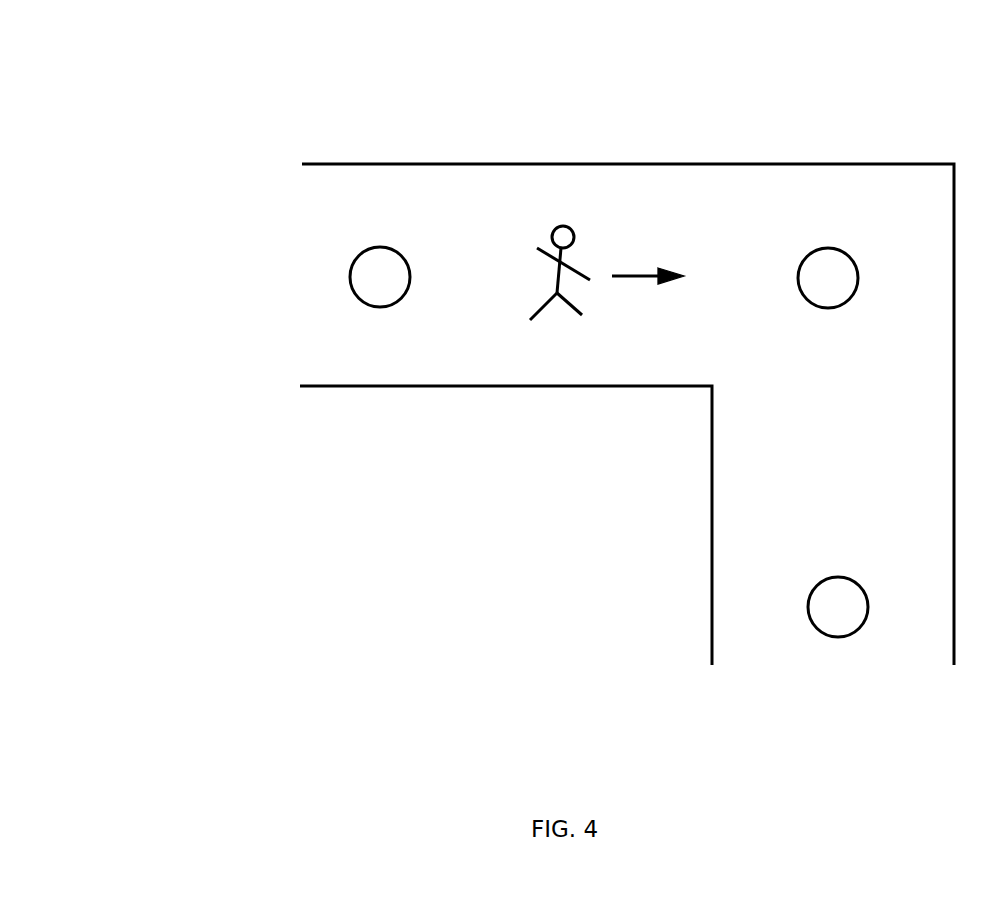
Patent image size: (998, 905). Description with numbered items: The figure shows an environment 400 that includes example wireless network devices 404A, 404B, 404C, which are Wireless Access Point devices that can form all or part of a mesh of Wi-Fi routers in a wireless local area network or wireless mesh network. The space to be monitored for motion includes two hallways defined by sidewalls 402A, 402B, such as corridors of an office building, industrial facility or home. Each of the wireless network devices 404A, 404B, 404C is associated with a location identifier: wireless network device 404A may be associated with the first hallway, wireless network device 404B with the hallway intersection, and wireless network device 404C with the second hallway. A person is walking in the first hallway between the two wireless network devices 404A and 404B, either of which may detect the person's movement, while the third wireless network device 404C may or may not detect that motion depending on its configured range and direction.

The environment 400 is at (106, 67).
The sidewall 402A is at (512, 163).
The sidewall 402B is at (518, 386).
The wireless network device 404A is at (350, 275).
The wireless network device 404B is at (797, 278).
The wireless network device 404C is at (810, 607).